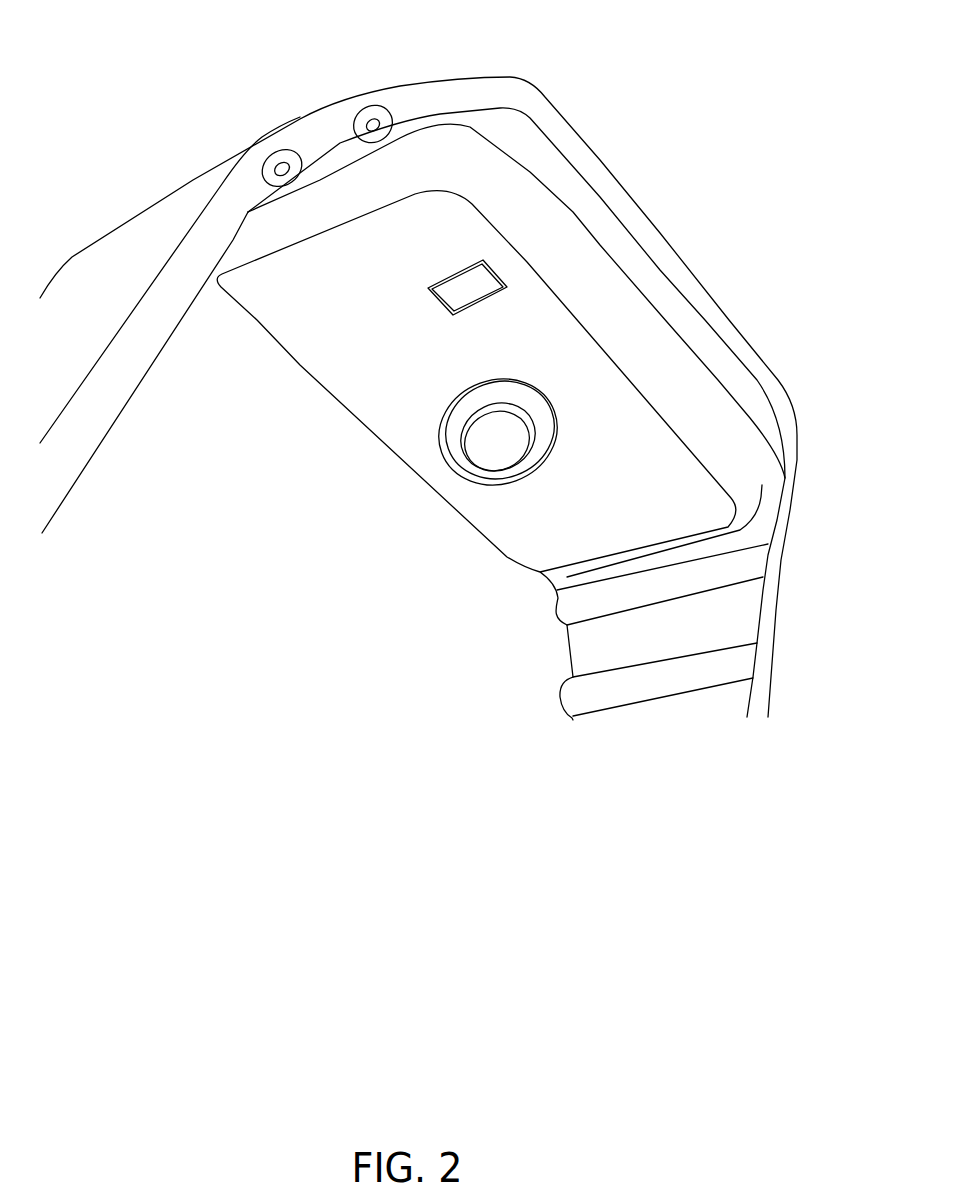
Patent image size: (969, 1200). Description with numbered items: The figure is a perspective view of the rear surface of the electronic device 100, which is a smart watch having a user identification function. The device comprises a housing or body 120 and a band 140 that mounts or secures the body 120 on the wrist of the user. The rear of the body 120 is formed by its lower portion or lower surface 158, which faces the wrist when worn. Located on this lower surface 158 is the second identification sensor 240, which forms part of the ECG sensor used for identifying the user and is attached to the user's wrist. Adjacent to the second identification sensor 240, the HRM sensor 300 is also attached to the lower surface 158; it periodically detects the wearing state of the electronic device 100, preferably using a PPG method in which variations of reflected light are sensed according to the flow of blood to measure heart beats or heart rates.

The electronic device 100 is at (418, 390).
The body 120 is at (610, 172).
The band 140 is at (158, 203).
The lower surface 158 is at (548, 522).
The second identification sensor 240 is at (487, 443).
The HRM sensor 300 is at (457, 293).